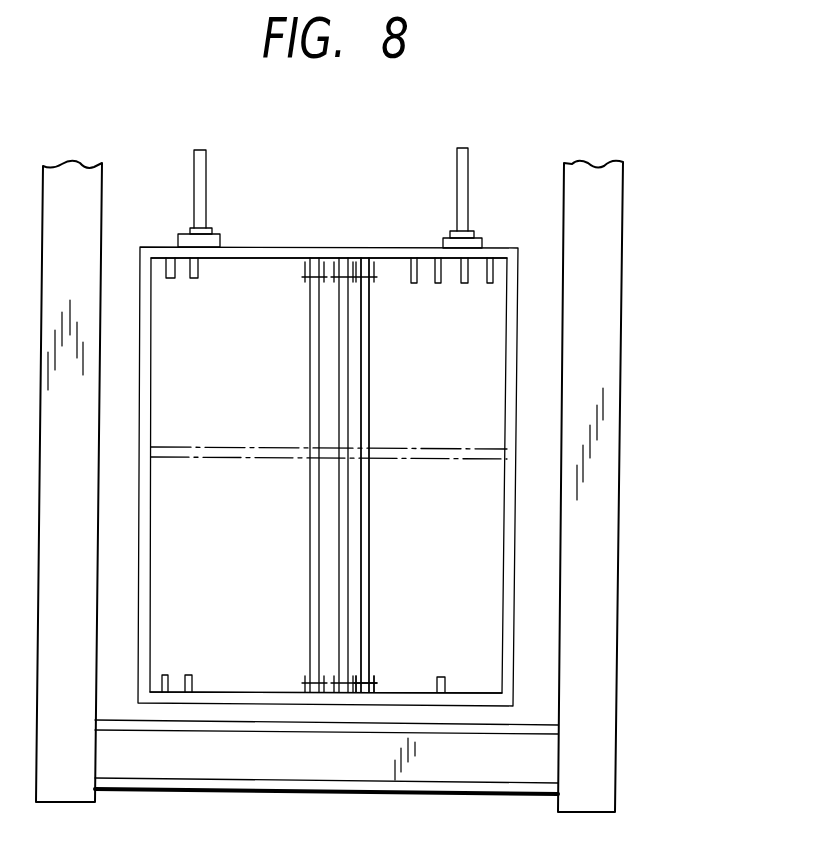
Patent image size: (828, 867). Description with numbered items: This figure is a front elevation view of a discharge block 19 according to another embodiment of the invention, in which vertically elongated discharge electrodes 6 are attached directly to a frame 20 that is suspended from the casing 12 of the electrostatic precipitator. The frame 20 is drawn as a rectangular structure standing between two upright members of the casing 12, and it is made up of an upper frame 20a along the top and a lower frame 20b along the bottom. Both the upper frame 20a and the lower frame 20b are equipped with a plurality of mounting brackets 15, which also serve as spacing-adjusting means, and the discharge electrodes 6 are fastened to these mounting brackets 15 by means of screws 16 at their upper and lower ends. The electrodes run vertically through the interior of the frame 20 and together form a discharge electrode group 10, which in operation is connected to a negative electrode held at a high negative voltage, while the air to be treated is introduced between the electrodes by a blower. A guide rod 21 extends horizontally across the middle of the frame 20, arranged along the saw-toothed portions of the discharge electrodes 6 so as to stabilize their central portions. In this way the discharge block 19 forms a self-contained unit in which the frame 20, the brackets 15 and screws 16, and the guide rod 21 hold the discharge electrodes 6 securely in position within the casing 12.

The discharge electrode 6 is at (370, 395).
The discharge electrode group 10 is at (375, 545).
The casing 12 is at (594, 369).
The mounting bracket 15 is at (197, 271).
The screw 16 is at (373, 678).
The discharge block 19 is at (634, 207).
The frame 20 is at (260, 247).
The upper frame 20a is at (320, 257).
The lower frame 20b is at (230, 692).
The guide rod 21 is at (256, 447).